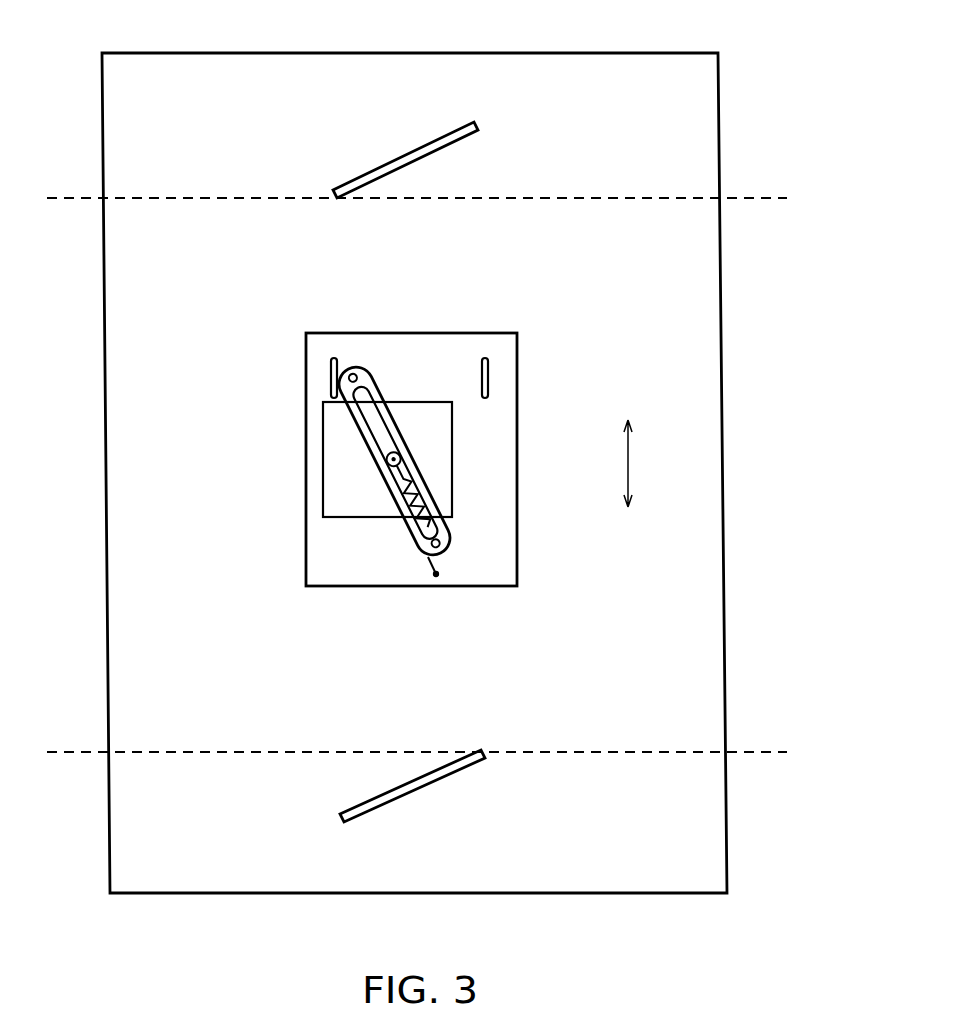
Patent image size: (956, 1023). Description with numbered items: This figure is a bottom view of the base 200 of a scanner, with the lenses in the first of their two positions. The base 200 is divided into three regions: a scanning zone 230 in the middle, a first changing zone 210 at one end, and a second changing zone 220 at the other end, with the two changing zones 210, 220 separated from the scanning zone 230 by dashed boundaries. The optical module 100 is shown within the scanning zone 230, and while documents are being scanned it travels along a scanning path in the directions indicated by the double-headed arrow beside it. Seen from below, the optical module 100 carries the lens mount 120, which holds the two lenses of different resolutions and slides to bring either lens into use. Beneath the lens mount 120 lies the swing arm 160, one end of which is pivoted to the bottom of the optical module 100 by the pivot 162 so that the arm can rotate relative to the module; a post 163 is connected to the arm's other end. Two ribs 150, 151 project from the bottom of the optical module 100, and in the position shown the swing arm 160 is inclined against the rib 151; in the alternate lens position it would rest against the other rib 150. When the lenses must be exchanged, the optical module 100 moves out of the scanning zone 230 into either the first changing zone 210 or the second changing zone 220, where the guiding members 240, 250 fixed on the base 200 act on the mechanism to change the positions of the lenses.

The optical module 100 is at (343, 586).
The lens mount 120 is at (340, 470).
The rib 150 is at (491, 372).
The rib 151 is at (331, 372).
The swing arm 160 is at (425, 470).
The pivot 162 is at (448, 540).
The post 163 is at (352, 374).
The base 200 is at (105, 440).
The first changing zone 210 is at (695, 129).
The second changing zone 220 is at (703, 823).
The scanning zone 230 is at (700, 520).
The guiding member 240 is at (430, 137).
The guiding member 250 is at (385, 806).